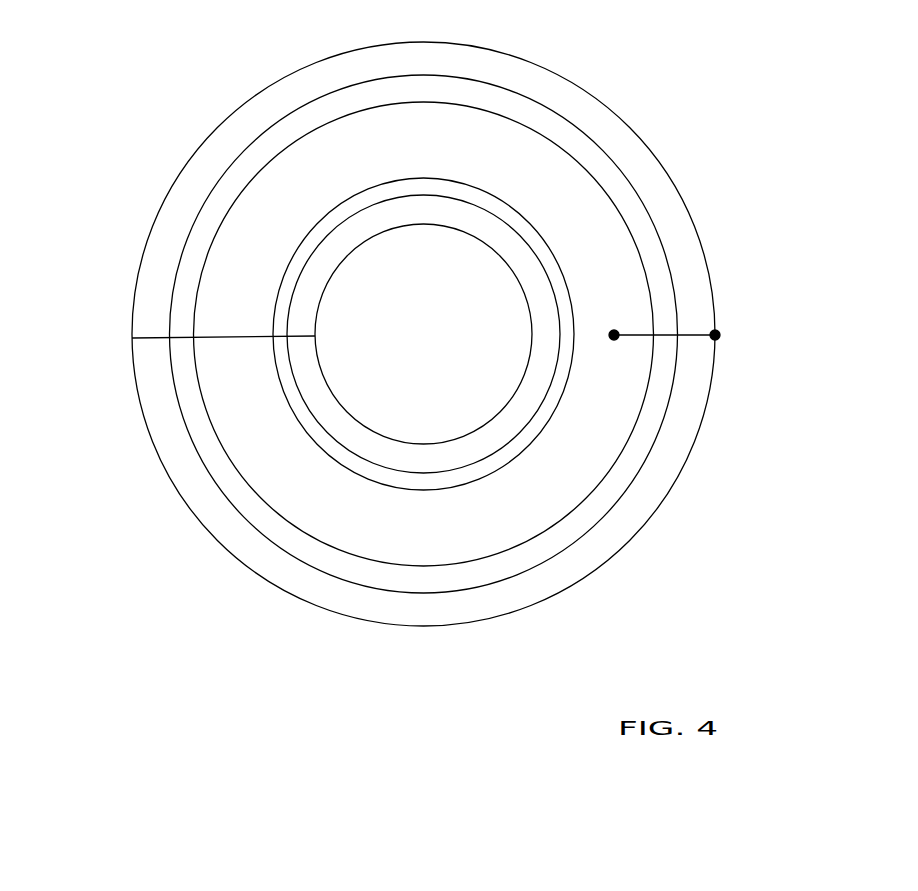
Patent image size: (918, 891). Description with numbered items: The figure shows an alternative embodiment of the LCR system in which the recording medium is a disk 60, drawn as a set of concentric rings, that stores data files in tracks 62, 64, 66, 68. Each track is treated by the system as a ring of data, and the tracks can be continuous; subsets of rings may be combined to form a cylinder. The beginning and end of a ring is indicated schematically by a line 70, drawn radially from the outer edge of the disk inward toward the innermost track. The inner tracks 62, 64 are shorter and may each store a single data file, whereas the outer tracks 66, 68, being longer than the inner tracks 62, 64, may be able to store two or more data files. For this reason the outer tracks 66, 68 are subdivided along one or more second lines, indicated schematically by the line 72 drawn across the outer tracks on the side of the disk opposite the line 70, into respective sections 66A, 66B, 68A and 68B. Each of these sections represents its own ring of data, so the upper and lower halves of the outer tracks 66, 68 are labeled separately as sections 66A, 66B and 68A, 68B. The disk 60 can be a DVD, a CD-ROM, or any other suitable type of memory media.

The disk 60 is at (225, 630).
The inner track 62 is at (480, 462).
The inner track 64 is at (538, 437).
The outer track 66 is at (477, 381).
The section 66A is at (495, 555).
The section 66B is at (627, 222).
The outer track 68 is at (464, 340).
The section 68A is at (590, 533).
The section 68B is at (655, 237).
The line 70 is at (132, 338).
The second line 72 is at (715, 335).